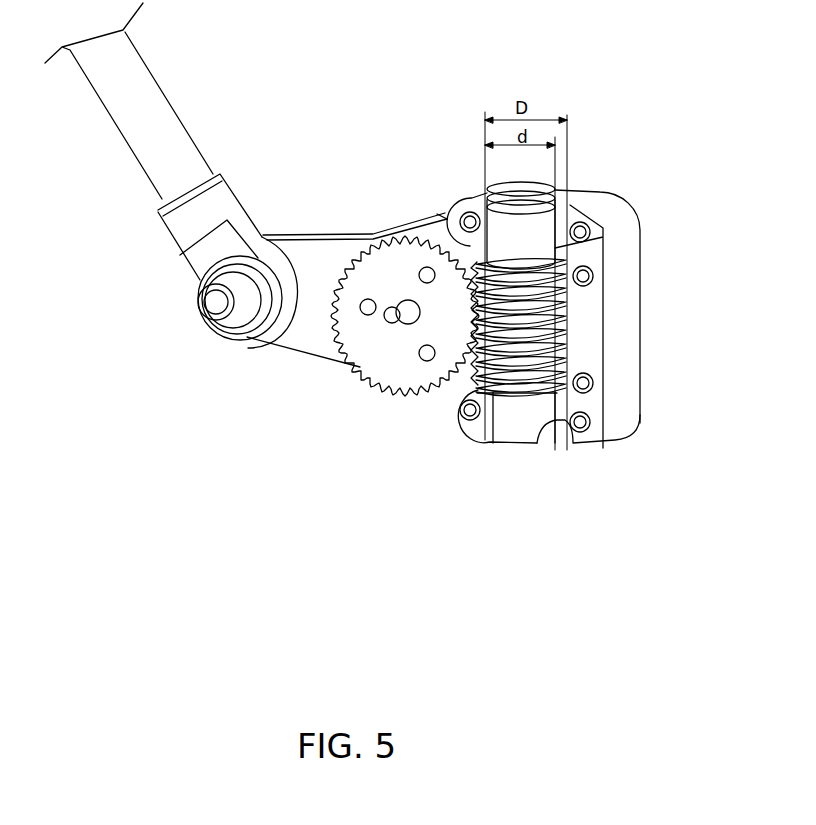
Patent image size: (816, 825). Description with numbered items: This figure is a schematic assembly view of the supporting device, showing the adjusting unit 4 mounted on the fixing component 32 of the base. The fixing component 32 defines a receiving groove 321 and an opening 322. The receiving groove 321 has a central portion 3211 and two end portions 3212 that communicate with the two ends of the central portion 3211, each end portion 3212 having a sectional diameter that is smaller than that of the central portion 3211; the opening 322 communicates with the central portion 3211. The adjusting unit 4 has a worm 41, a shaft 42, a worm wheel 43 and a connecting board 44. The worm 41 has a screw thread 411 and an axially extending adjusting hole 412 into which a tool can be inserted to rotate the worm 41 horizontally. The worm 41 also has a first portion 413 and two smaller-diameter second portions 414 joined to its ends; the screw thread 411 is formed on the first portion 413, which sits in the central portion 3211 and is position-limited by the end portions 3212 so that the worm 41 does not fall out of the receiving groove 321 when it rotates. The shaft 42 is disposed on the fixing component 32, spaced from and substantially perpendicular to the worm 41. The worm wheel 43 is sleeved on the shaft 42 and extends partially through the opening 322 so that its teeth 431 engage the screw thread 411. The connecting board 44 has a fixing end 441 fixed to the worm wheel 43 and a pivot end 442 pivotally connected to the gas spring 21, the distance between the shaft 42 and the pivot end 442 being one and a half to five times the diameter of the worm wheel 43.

The gas spring 21 is at (110, 113).
The adjusting unit 4 is at (300, 143).
The worm 41 is at (601, 319).
The screw thread 411 is at (557, 290).
The adjusting hole 412 is at (563, 204).
The first portion 413 is at (557, 392).
The second portions 414 is at (623, 425).
The shaft 42 is at (362, 236).
The worm wheel 43 is at (417, 248).
The teeth 431 is at (437, 215).
The connecting board 44 is at (325, 232).
The fixing end 441 is at (390, 306).
The pivot end 442 is at (257, 337).
The fixing component 32 is at (501, 368).
The receiving groove 321 is at (517, 368).
The central portion 3211 is at (540, 343).
The end portions 3212 is at (545, 423).
The opening 322 is at (460, 388).